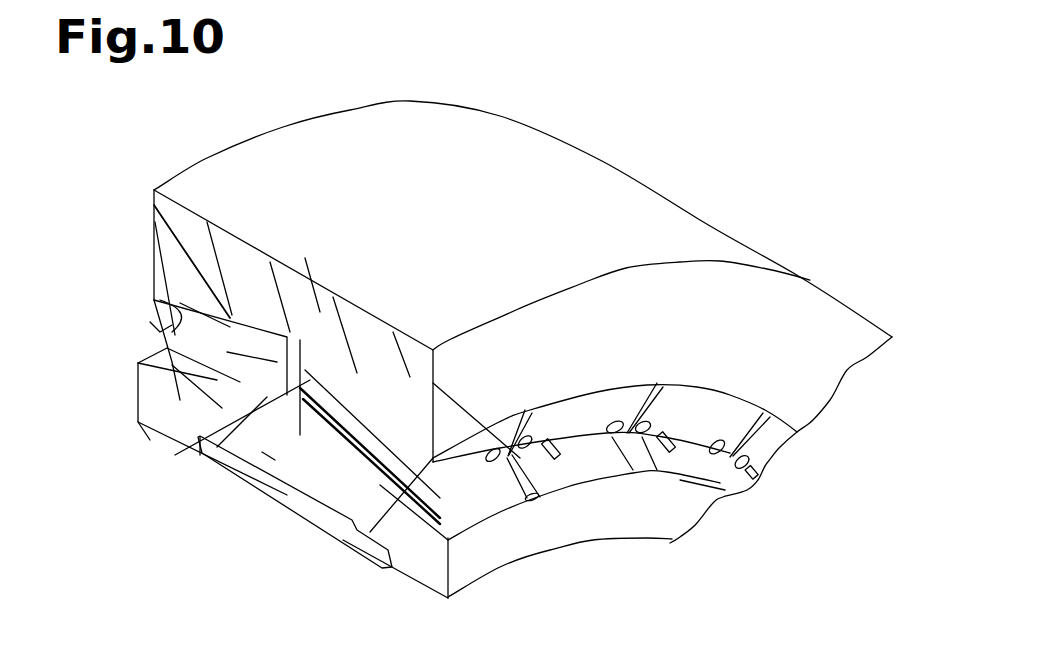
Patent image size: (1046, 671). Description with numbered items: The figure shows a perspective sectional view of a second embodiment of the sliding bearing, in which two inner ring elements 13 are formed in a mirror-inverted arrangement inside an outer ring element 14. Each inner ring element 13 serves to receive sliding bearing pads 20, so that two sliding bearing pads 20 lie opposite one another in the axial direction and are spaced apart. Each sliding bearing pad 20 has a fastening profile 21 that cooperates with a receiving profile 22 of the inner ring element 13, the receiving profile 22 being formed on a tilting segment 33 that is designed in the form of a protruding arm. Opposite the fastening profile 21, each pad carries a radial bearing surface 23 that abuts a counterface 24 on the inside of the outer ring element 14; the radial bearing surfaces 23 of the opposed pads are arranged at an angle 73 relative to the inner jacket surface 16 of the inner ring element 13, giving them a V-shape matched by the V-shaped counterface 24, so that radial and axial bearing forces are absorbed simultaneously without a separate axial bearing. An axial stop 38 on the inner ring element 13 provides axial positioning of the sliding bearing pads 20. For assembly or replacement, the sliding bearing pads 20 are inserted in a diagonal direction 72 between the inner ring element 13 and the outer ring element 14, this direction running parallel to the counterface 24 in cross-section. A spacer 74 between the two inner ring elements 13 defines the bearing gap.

The inner ring element 13 is at (153, 408).
The outer ring element 14 is at (577, 198).
The inner jacket surface 16 is at (512, 562).
The sliding bearing pad 20 is at (155, 310).
The fastening profile 21 is at (273, 497).
The receiving profile 22 is at (262, 452).
The radial bearing surface 23 is at (154, 205).
The counterface 24 is at (143, 340).
The tilting segment 33 is at (273, 393).
The axial stop 38 is at (237, 380).
The diagonal direction 72 is at (252, 358).
The angle 73 is at (150, 322).
The spacer 74 is at (282, 390).